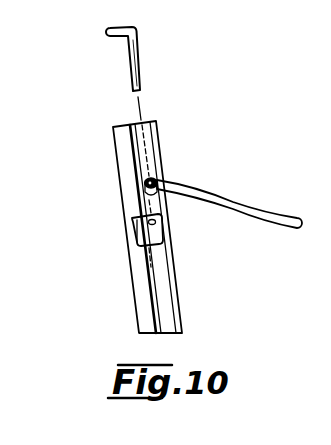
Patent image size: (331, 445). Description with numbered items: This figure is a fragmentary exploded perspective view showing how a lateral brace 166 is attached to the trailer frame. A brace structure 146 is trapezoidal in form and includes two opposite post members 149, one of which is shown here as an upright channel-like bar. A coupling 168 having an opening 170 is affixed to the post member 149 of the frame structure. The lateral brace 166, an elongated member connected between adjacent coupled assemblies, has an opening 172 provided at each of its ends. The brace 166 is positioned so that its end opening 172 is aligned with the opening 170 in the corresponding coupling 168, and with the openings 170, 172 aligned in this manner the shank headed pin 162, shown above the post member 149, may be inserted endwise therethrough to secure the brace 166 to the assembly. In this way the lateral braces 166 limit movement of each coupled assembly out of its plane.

The brace structure 146 is at (138, 309).
The post member 149 is at (184, 286).
The shank headed pin 162 is at (134, 40).
The lateral brace 166 is at (238, 196).
The coupling 168 is at (164, 233).
The opening 170 is at (140, 218).
The opening 172 is at (160, 176).